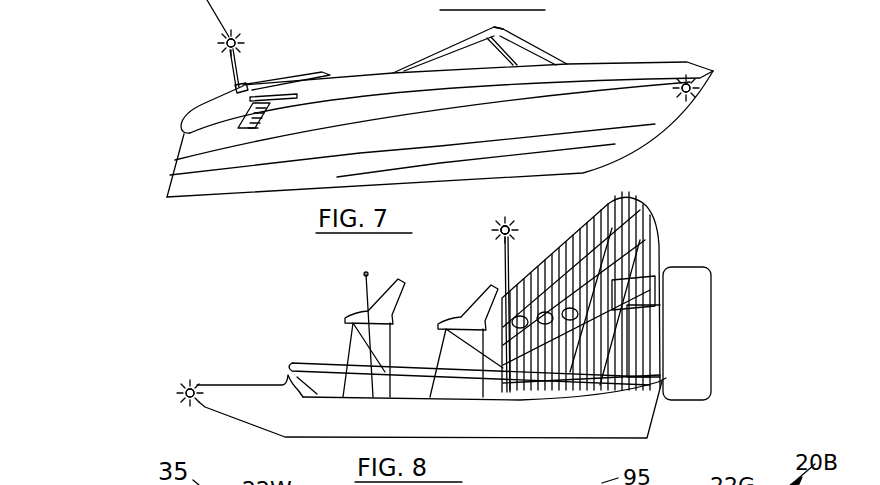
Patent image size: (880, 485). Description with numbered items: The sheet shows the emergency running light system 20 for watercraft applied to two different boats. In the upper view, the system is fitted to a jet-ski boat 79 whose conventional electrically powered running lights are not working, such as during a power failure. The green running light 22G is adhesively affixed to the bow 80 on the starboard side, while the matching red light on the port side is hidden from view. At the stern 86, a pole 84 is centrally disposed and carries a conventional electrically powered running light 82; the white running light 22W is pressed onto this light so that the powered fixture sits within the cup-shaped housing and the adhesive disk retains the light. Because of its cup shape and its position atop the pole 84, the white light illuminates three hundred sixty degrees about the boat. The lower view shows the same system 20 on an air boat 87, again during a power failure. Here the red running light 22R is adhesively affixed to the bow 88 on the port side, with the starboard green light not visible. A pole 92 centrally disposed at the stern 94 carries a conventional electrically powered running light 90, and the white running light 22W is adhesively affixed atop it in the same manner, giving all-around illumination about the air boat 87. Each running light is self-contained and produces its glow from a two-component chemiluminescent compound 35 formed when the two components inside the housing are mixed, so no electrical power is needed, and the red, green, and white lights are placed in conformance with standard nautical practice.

In FIG. 7, the emergency running light system 20 is at (168, 49).
In FIG. 8, the emergency running light system 20 is at (574, 204).
In FIG. 7, the two-component chemiluminescent compound 35 is at (238, 40).
In FIG. 8, the two-component chemiluminescent compound 35 is at (500, 222).
In FIG. 7, the jet-ski boat 79 is at (616, 43).
In FIG. 7, the bow 80 is at (682, 108).
In FIG. 7, the electrically powered running light 82 is at (228, 56).
In FIG. 7, the pole 84 is at (242, 70).
In FIG. 7, the stern 86 is at (174, 143).
In FIG. 8, the air boat 87 is at (313, 303).
In FIG. 8, the bow 88 is at (212, 410).
In FIG. 8, the electrically powered running light 90 is at (500, 258).
In FIG. 8, the pole 92 is at (513, 257).
In FIG. 8, the stern 94 is at (657, 413).
In FIG. 7, the green running light 22G is at (697, 85).
In FIG. 8, the red running light 22R is at (182, 400).
In FIG. 8, the white running light 22W is at (497, 238).